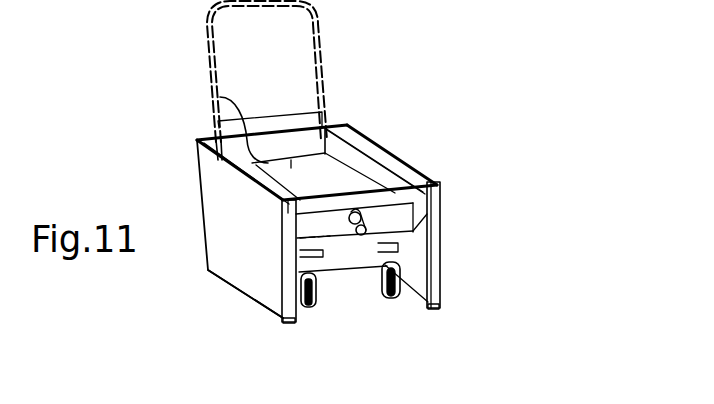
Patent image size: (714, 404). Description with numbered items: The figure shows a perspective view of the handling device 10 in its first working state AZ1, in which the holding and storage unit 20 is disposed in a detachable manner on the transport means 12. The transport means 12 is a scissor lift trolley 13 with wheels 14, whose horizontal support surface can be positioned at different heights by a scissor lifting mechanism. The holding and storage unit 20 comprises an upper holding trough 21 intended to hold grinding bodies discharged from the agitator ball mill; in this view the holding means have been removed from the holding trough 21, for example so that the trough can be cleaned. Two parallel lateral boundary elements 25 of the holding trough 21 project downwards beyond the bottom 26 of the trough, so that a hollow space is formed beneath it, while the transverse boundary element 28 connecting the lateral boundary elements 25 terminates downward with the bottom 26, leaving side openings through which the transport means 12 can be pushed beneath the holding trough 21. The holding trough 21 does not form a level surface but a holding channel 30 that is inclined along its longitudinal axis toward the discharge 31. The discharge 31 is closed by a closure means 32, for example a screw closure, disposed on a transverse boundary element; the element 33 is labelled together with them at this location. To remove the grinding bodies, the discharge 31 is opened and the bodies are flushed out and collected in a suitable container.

The handling device 10 is at (428, 58).
The first working state AZ1 is at (309, 181).
The transport means 12 is at (310, 80).
The scissor lift trolley 13 is at (392, 30).
The holding and storage unit 20 is at (380, 121).
The holding trough 21 is at (200, 124).
The bottom 26 is at (220, 97).
The holding channel 30 is at (291, 168).
The transverse boundary element 28 is at (426, 182).
The lateral boundary elements 25 is at (247, 276).
The discharge 31 is at (334, 285).
The closure means 32 is at (334, 285).
The latch 33 is at (353, 240).
The wheels 14 is at (394, 277).